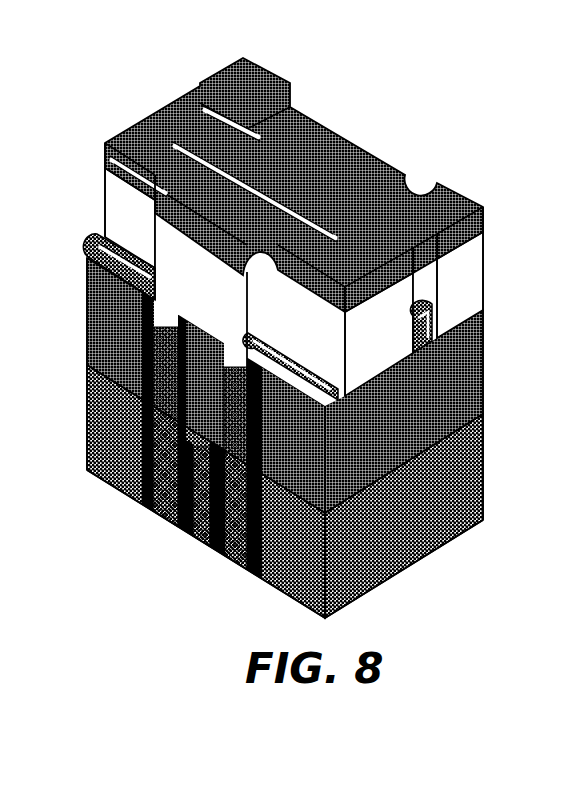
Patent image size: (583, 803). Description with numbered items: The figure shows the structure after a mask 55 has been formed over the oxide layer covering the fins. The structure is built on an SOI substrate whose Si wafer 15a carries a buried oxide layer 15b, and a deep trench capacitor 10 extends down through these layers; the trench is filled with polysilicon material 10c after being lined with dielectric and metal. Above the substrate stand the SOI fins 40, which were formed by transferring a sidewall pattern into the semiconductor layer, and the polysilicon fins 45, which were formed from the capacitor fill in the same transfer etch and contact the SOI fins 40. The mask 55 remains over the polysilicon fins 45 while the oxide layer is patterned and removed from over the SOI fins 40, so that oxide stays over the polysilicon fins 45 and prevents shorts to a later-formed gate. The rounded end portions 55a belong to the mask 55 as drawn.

The rounded end portions of hard mask 55a is at (172, 100).
The SOI fins 40 is at (93, 242).
The polysilicon fins 45 is at (318, 176).
The mask 55 is at (491, 243).
The buried oxide layer 15b is at (484, 378).
The Si wafer 15a is at (484, 486).
The deep trench capacitor 10 is at (163, 522).
The polysilicon material 10c is at (233, 567).